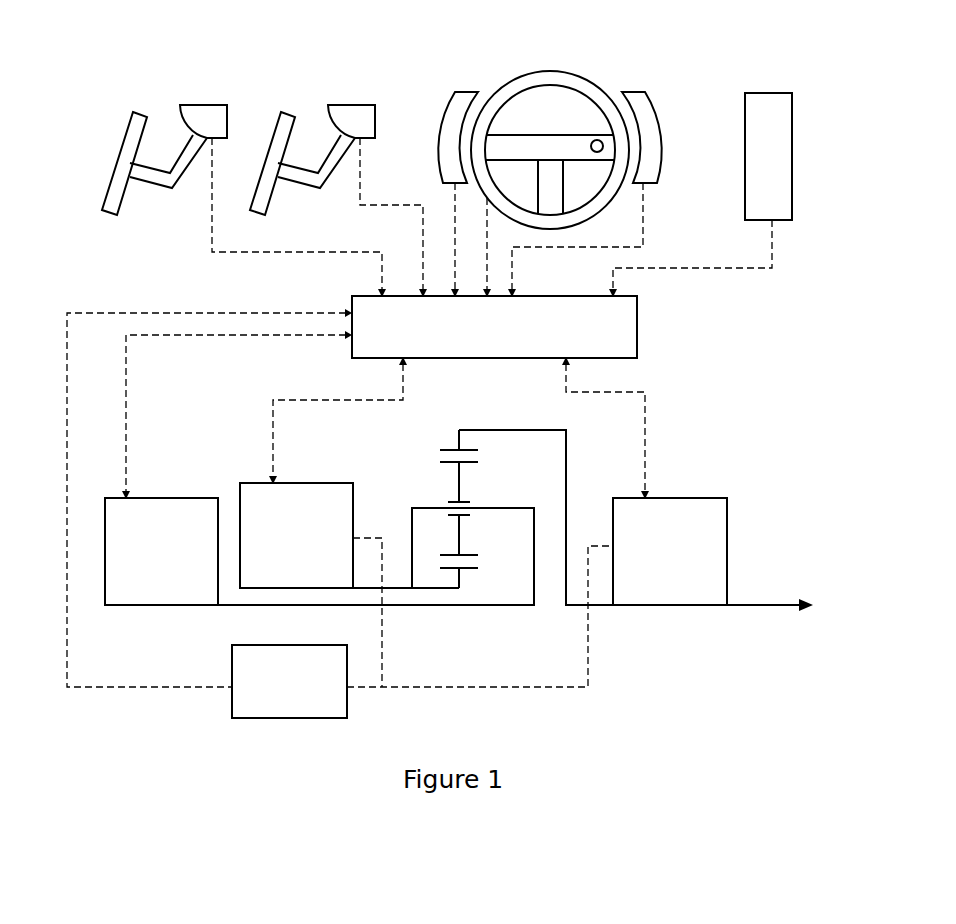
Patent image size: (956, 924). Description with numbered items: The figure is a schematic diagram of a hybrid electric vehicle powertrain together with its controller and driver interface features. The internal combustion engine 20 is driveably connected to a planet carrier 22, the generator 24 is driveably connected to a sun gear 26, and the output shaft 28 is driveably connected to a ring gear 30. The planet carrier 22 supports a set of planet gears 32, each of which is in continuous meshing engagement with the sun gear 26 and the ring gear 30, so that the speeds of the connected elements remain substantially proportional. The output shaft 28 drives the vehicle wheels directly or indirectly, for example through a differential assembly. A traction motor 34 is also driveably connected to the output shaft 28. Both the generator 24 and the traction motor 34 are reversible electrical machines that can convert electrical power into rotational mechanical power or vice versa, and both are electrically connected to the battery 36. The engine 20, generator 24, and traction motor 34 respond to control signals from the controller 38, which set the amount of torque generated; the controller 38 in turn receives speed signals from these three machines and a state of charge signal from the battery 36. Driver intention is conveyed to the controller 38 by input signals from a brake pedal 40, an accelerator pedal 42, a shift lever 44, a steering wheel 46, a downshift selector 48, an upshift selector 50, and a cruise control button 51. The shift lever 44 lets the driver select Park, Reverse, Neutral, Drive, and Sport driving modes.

The internal combustion engine 20 is at (148, 498).
The planet carrier 22 is at (534, 588).
The generator 24 is at (298, 483).
The sun gear 26 is at (458, 582).
The output shaft 28 is at (750, 605).
The ring gear 30 is at (458, 438).
The planet gears 32 is at (458, 486).
The traction motor 34 is at (667, 498).
The battery 36 is at (265, 645).
The controller 38 is at (637, 322).
The brake pedal 40 is at (112, 130).
The accelerator pedal 42 is at (260, 130).
The shift lever 44 is at (760, 93).
The steering wheel 46 is at (533, 72).
The downshift selector 48 is at (472, 92).
The upshift selector 50 is at (630, 92).
The cruise control button 51 is at (602, 141).